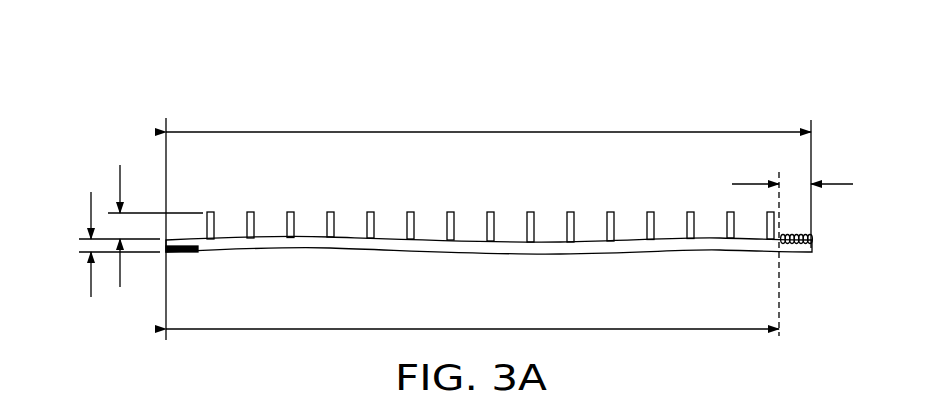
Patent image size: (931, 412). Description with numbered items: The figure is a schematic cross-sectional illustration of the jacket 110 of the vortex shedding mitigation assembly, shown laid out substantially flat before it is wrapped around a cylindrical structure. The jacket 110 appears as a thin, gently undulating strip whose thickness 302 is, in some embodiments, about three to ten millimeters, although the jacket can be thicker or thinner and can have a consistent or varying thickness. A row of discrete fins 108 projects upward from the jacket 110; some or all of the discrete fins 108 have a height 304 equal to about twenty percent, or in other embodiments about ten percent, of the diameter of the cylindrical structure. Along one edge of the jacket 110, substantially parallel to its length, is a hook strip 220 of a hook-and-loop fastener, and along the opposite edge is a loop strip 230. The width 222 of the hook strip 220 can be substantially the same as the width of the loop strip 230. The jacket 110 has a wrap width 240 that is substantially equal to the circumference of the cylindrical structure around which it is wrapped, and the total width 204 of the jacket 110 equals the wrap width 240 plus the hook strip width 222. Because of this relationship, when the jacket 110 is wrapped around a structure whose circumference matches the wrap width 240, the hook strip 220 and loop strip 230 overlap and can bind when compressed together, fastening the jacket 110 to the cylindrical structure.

The jacket 110 is at (249, 80).
The discrete fins 108 is at (252, 212).
The total width 204 is at (488, 132).
The wrap width 240 is at (475, 328).
The width of hook strip 222 is at (845, 184).
The hook strip 220 is at (797, 234).
The loop strip 230 is at (187, 253).
The height 304 is at (120, 175).
The thickness 302 is at (91, 290).